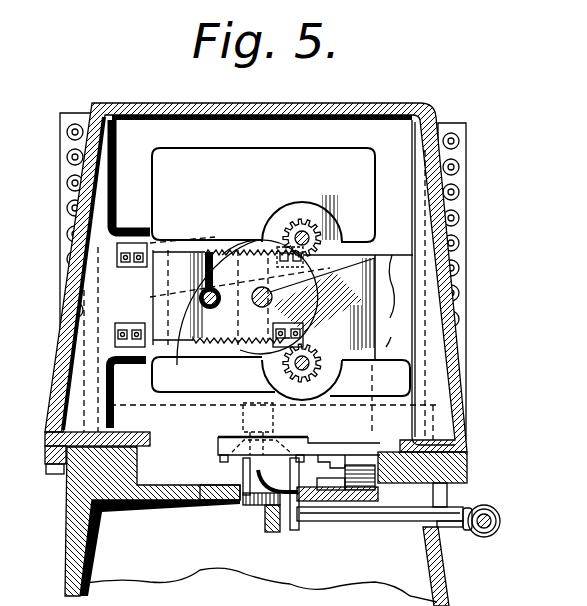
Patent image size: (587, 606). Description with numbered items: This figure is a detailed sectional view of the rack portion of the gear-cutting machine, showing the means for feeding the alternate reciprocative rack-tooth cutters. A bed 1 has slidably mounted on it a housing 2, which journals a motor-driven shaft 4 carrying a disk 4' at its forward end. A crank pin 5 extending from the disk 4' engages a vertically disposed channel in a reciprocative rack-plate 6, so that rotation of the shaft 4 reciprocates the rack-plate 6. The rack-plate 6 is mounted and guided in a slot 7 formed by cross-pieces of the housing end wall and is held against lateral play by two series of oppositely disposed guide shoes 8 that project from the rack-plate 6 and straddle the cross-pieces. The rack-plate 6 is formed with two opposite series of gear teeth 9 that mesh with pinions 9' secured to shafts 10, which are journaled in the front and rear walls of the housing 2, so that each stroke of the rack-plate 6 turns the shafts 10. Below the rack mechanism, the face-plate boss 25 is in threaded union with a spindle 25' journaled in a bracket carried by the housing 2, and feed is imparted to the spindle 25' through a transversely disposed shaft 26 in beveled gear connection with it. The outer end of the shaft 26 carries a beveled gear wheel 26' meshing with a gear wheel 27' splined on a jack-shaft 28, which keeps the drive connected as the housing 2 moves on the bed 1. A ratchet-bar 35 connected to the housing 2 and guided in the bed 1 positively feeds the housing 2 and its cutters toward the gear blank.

The bed 1 is at (68, 555).
The housing 2 is at (398, 130).
The shaft 4 is at (292, 297).
The disk 4' is at (322, 275).
The crank pin 5 is at (217, 310).
The rack-plate 6 is at (218, 297).
The slot 7 is at (391, 301).
The guide shoes 8 is at (129, 250).
The gear teeth 9 is at (210, 317).
The pinions 9' is at (281, 283).
The shafts 10 is at (308, 233).
The boss 25 is at (236, 417).
The spindle 25' is at (281, 451).
The shaft 26 is at (353, 502).
The beveled gear wheel 26' is at (470, 536).
The gear wheel 27' is at (507, 539).
The jack-shaft 28 is at (500, 521).
The ratchet-bar 35 is at (345, 465).